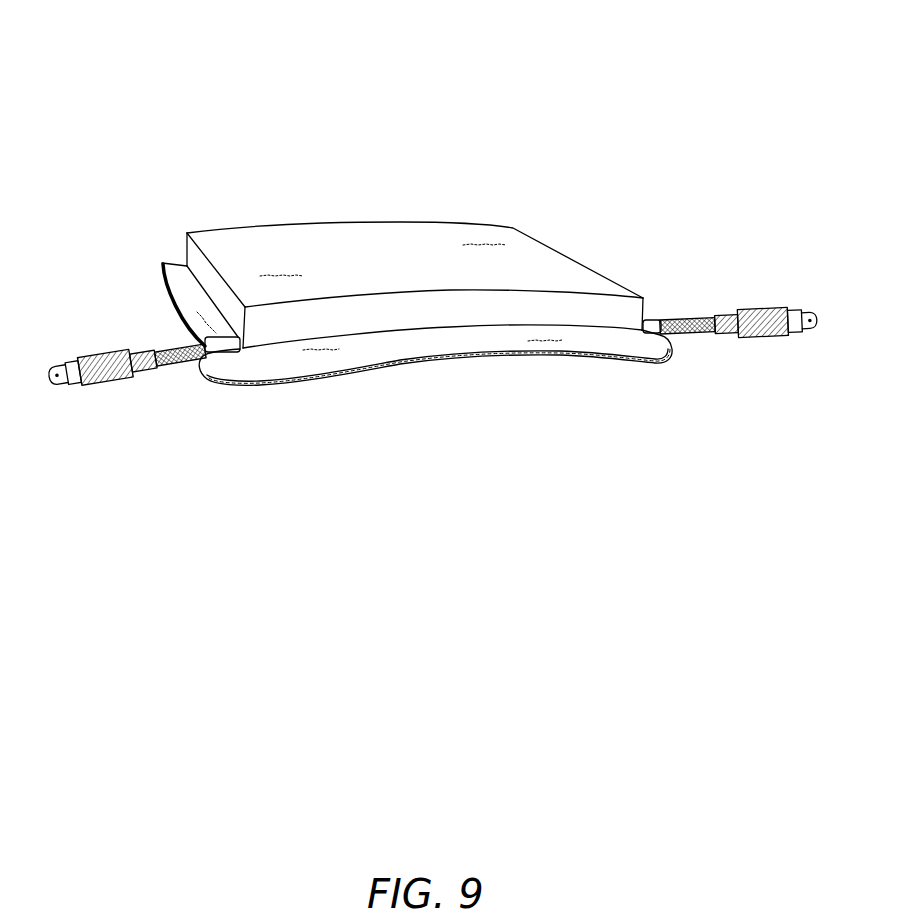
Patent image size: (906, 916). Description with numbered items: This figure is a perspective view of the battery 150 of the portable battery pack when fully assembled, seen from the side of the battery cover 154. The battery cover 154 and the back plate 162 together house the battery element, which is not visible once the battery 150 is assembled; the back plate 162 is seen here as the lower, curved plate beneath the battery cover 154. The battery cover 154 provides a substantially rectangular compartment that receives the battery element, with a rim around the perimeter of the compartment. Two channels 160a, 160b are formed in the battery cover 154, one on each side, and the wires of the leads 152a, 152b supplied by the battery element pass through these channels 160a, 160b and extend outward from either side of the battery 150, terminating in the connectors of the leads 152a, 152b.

The battery 150 is at (335, 71).
The lead 152a is at (112, 348).
The lead 152b is at (763, 308).
The battery cover 154 is at (378, 220).
The channel 160a is at (213, 353).
The channel 160b is at (652, 318).
The back plate 162 is at (440, 367).